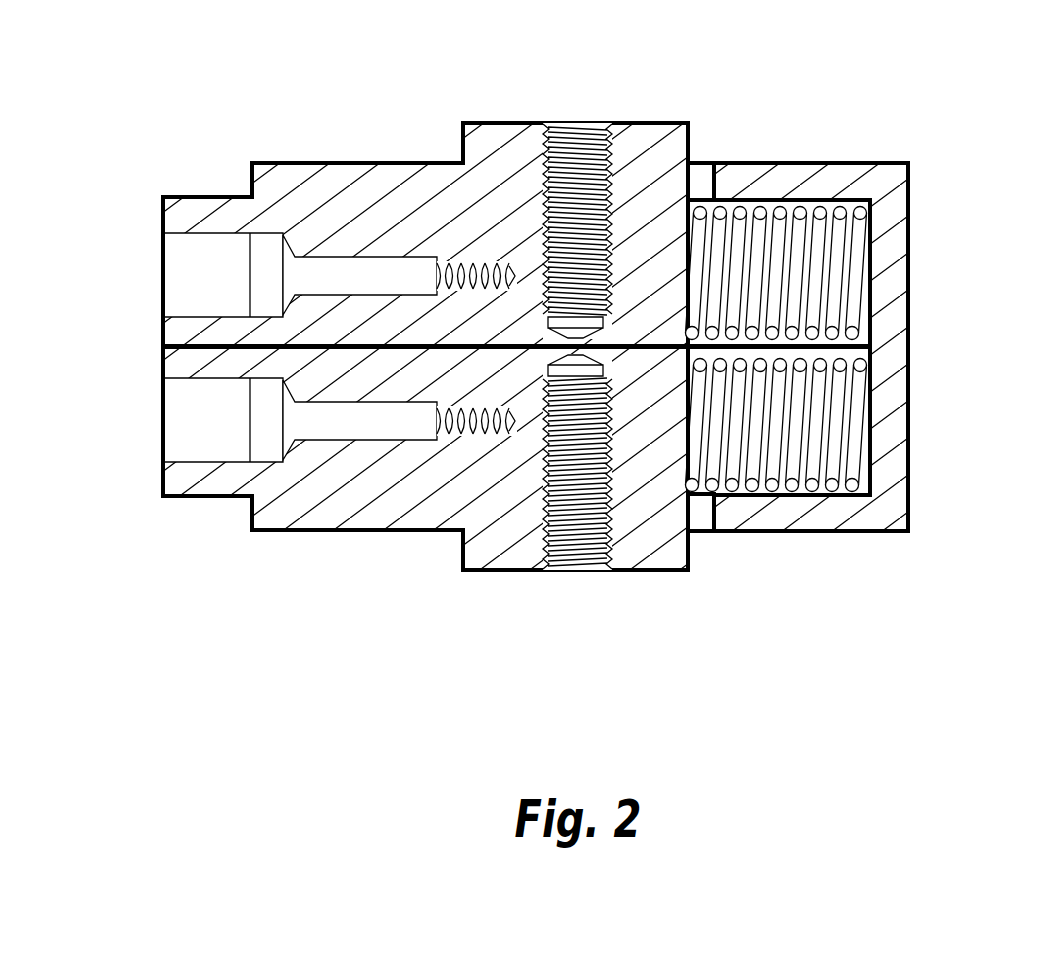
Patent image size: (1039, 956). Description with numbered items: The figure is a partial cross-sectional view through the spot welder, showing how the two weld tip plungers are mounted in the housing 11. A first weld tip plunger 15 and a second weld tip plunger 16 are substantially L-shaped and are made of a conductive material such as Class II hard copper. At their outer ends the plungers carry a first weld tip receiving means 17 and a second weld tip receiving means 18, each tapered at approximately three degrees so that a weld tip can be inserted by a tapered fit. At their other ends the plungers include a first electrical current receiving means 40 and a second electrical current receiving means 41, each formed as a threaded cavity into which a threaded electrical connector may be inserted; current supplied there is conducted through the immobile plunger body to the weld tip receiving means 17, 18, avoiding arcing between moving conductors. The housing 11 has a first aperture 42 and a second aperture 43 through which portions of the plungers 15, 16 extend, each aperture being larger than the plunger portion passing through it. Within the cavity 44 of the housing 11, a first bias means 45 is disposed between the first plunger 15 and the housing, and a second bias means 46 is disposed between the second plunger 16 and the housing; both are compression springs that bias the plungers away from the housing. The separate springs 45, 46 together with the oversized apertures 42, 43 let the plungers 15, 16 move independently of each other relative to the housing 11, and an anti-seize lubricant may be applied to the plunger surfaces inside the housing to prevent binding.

The housing 11 is at (357, 182).
The first weld tip plunger 15 is at (206, 232).
The second weld tip plunger 16 is at (220, 497).
The first weld tip receiving means 17 is at (203, 232).
The second weld tip receiving means 18 is at (203, 462).
The first electrical current receiving means 40 is at (582, 160).
The second electrical current receiving means 41 is at (570, 513).
The first aperture 42 is at (702, 180).
The second aperture 43 is at (700, 513).
The cavity 44 is at (832, 352).
The first bias means 45 is at (816, 228).
The second bias means 46 is at (813, 443).